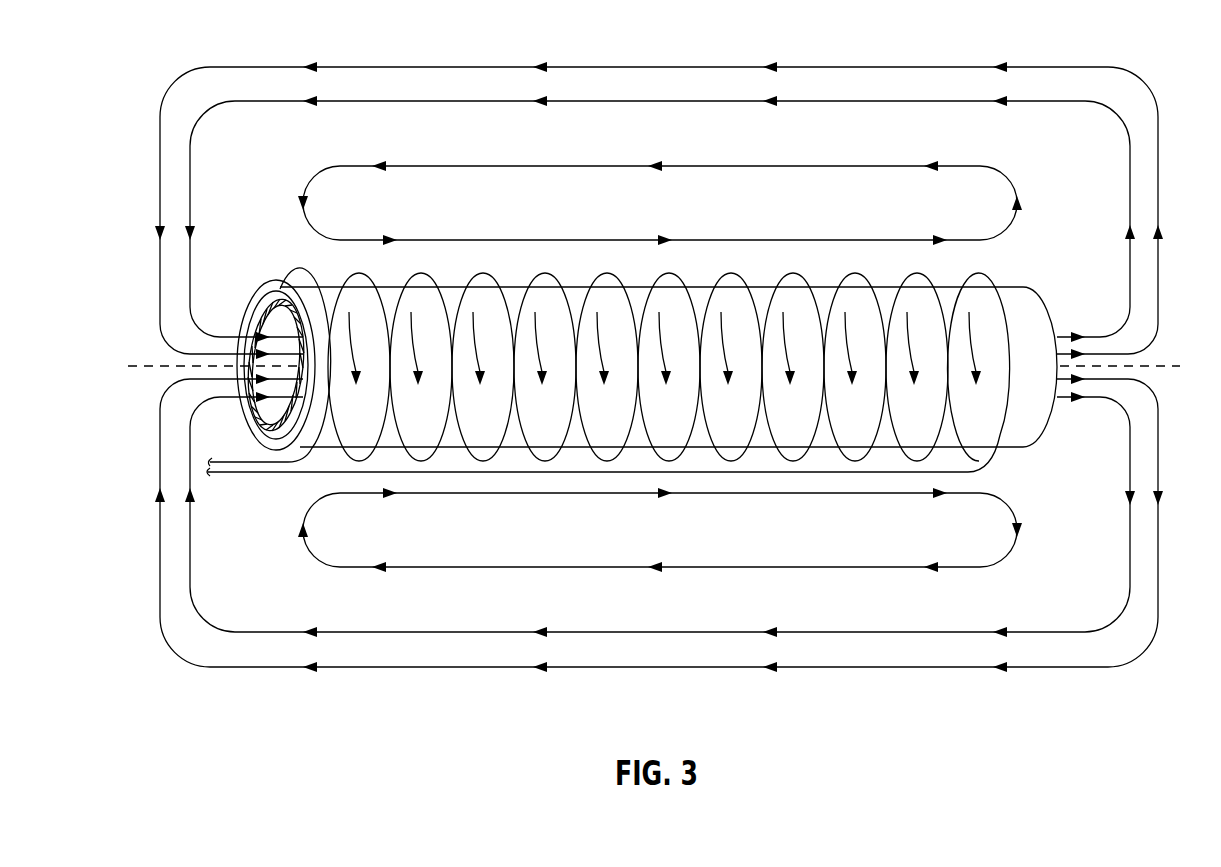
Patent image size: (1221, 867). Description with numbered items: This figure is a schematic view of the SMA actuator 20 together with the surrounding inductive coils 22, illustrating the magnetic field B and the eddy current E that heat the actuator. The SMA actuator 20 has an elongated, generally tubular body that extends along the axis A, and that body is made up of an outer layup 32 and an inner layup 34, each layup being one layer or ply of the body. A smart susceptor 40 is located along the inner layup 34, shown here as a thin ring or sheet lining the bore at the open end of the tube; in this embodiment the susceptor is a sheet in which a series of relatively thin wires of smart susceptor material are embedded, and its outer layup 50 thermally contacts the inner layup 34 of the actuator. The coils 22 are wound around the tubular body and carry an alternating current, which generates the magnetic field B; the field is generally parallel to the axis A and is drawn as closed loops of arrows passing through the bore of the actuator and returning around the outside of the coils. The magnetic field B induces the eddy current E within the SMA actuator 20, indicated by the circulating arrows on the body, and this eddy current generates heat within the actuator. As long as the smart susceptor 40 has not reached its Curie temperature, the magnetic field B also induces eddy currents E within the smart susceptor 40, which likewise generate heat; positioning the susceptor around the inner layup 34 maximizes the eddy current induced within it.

The SMA actuator 20 is at (1030, 307).
The coils 22 is at (858, 275).
The outer layup 32 is at (767, 286).
The inner layup 34 is at (303, 400).
The smart susceptor 40 is at (262, 308).
The liner 50 is at (274, 299).
The axis A is at (656, 367).
The magnetic field B is at (693, 667).
The eddy current E is at (852, 353).